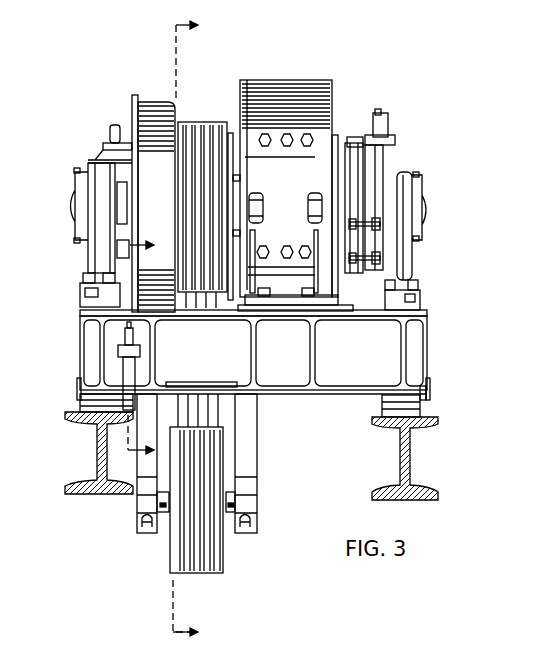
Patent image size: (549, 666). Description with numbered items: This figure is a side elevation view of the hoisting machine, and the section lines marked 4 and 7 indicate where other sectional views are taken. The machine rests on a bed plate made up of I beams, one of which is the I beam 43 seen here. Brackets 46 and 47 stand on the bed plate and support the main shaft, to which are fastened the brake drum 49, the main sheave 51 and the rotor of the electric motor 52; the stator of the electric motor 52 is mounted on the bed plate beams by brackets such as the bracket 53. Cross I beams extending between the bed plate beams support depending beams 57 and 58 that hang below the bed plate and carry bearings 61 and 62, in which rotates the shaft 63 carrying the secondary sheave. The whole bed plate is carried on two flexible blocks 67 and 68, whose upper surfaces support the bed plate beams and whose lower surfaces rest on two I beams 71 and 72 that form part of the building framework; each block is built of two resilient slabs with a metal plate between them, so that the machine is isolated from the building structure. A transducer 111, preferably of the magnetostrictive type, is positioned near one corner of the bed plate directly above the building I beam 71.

The section line 4- 4 is at (193, 328).
The section line 7- 7 is at (139, 350).
The I beam 43 is at (415, 358).
The bracket 46 is at (95, 263).
The bracket 47 is at (404, 256).
The brake drum 49 is at (150, 100).
The main sheave 51 is at (194, 120).
The electric motor 52 is at (280, 80).
The bracket 53 is at (313, 243).
The depending beam 57 is at (248, 428).
The depending beam 58 is at (147, 470).
The bearing 61 is at (252, 485).
The bearing 62 is at (142, 508).
The shaft 63 is at (228, 513).
The flexible block 67 is at (80, 406).
The flexible block 68 is at (420, 407).
The I beam 71 is at (97, 454).
The I beam 72 is at (410, 457).
The transducer 111 is at (110, 351).